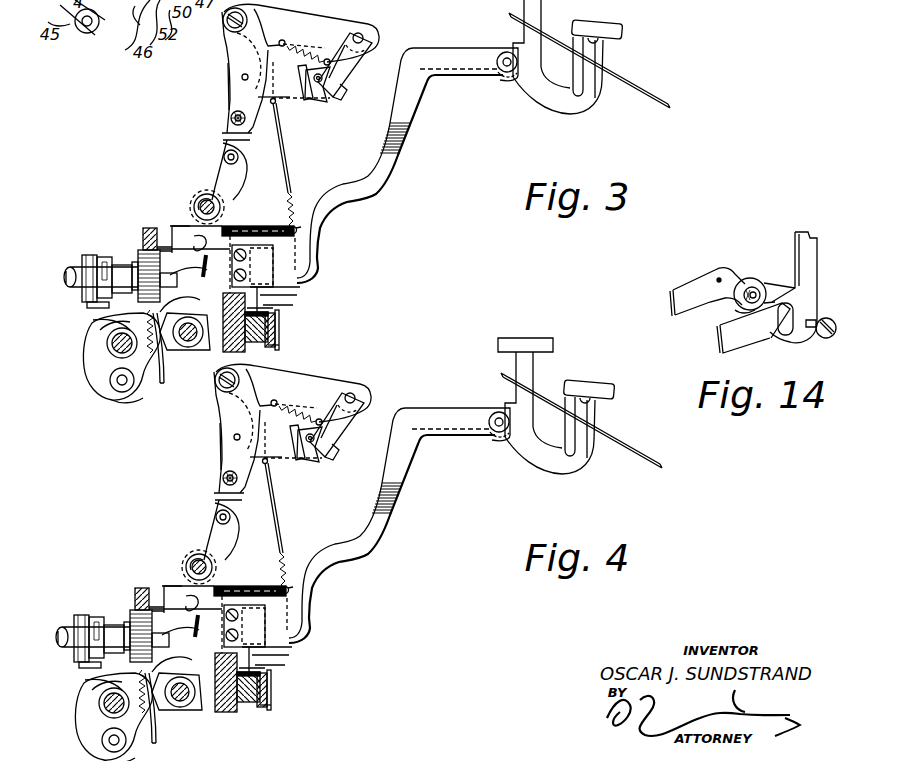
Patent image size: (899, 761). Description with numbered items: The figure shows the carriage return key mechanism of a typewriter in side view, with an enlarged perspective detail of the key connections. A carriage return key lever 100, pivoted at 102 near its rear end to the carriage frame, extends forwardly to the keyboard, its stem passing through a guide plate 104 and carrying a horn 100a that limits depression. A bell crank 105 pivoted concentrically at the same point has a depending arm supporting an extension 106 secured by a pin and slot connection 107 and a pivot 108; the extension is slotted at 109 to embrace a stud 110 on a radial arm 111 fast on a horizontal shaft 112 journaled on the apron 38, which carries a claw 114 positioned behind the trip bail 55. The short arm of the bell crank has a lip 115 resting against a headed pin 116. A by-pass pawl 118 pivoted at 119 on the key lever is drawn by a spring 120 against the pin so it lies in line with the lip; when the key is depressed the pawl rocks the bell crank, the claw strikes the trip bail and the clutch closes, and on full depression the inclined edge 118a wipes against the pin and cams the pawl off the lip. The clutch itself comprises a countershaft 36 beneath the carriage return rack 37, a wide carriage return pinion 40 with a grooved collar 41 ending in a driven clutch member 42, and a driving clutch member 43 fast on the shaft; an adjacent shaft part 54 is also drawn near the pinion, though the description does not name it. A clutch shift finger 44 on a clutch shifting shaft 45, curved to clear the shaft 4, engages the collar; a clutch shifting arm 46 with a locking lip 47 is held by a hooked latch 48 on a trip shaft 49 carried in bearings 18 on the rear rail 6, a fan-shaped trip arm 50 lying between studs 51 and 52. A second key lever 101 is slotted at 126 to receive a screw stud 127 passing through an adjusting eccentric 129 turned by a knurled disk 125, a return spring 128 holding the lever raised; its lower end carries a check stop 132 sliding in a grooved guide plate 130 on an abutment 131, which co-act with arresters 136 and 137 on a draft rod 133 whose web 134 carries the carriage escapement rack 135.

In FIG. 3, the shaft 4 is at (112, 347).
In FIG. 4, the shaft 4 is at (92, 711).
In FIG. 3, the rear rail 6 is at (224, 312).
In FIG. 4, the rear rail 6 is at (219, 682).
In FIG. 3, the bearings 18 is at (206, 340).
In FIG. 4, the bearings 18 is at (190, 692).
In FIG. 3, the countershaft 36 is at (74, 272).
In FIG. 4, the countershaft 36 is at (85, 624).
In FIG. 3, the carriage return rack 37 is at (149, 228).
In FIG. 4, the carriage return rack 37 is at (140, 586).
In FIG. 3, the apron 38 is at (194, 236).
In FIG. 4, the apron 38 is at (167, 584).
In FIG. 3, the carriage return pinion 40 is at (140, 252).
In FIG. 4, the carriage return pinion 40 is at (133, 624).
In FIG. 3, the peripherally grooved collar 41 is at (120, 265).
In FIG. 4, the peripherally grooved collar 41 is at (110, 612).
In FIG. 3, the driven clutch member 42 is at (105, 258).
In FIG. 4, the driven clutch member 42 is at (94, 624).
In FIG. 3, the driving clutch member 43 is at (89, 256).
In FIG. 4, the driving clutch member 43 is at (78, 618).
In FIG. 3, the clutch shift finger 44 is at (88, 340).
In FIG. 4, the clutch shift finger 44 is at (96, 716).
In FIG. 3, the clutch shifting shaft 45 is at (117, 378).
In FIG. 4, the clutch shifting shaft 45 is at (114, 740).
In FIG. 3, the clutch shifting arm 46 is at (145, 398).
In FIG. 4, the clutch shifting arm 46 is at (142, 742).
In FIG. 3, the lateral locking lip 47 is at (95, 322).
In FIG. 4, the lateral locking lip 47 is at (87, 682).
In FIG. 3, the hooked latch 48 is at (87, 304).
In FIG. 4, the hooked latch 48 is at (73, 665).
In FIG. 3, the trip shaft 49 is at (183, 346).
In FIG. 4, the trip shaft 49 is at (190, 708).
In FIG. 3, the fan-shaped trip arm 50 is at (162, 368).
In FIG. 4, the fan-shaped trip arm 50 is at (169, 700).
In FIG. 3, the stud 51 is at (180, 304).
In FIG. 4, the stud 51 is at (175, 662).
In FIG. 3, the stud 52 is at (162, 384).
In FIG. 4, the stud 52 is at (159, 708).
In FIG. 3, the shaft end 54 is at (180, 283).
In FIG. 4, the shaft end 54 is at (175, 640).
In FIG. 3, the trip bail 55 is at (208, 265).
In FIG. 4, the trip bail 55 is at (209, 630).
In FIG. 3, the key lever 100 is at (318, 27).
In FIG. 4, the key lever 100 is at (293, 392).
In FIG. 14, the key lever 100 is at (697, 285).
In FIG. 3, the horn 100a is at (590, 28).
In FIG. 4, the horn 100a is at (576, 407).
In FIG. 3, the second key lever 101 is at (522, 12).
In FIG. 4, the second key lever 101 is at (442, 490).
In FIG. 14, the second key lever 101 is at (796, 258).
In FIG. 3, the pivot 102 is at (230, 30).
In FIG. 4, the pivot 102 is at (218, 409).
In FIG. 3, the guide plate 104 is at (641, 91).
In FIG. 4, the guide plate 104 is at (583, 420).
In FIG. 3, the bell crank 105 is at (247, 53).
In FIG. 4, the bell crank 105 is at (228, 464).
In FIG. 3, the extension 106 is at (222, 136).
In FIG. 4, the extension 106 is at (211, 490).
In FIG. 3, the pin and slot connection 107 is at (231, 118).
In FIG. 4, the pin and slot connection 107 is at (208, 474).
In FIG. 3, the pivot 108 is at (242, 78).
In FIG. 4, the pivot 108 is at (212, 441).
In FIG. 3, the slot 109 is at (228, 165).
In FIG. 4, the slot 109 is at (208, 531).
In FIG. 3, the stud 110 is at (224, 157).
In FIG. 4, the stud 110 is at (203, 529).
In FIG. 3, the radial arm 111 is at (212, 195).
In FIG. 4, the radial arm 111 is at (183, 557).
In FIG. 3, the horizontal shaft 112 is at (221, 207).
In FIG. 4, the horizontal shaft 112 is at (221, 567).
In FIG. 3, the claw 114 is at (200, 250).
In FIG. 4, the claw 114 is at (189, 599).
In FIG. 3, the lip 115 is at (305, 100).
In FIG. 4, the lip 115 is at (301, 454).
In FIG. 3, the headed pin 116 is at (328, 92).
In FIG. 4, the headed pin 116 is at (328, 454).
In FIG. 3, the by-pass pawl 118 is at (372, 45).
In FIG. 4, the by-pass pawl 118 is at (339, 425).
In FIG. 3, the abruptly inclined edge 118a is at (343, 86).
In FIG. 4, the abruptly inclined edge 118a is at (354, 454).
In FIG. 3, the pivot 119 is at (363, 36).
In FIG. 4, the pivot 119 is at (367, 396).
In FIG. 3, the spring 120 is at (309, 54).
In FIG. 4, the spring 120 is at (324, 393).
In FIG. 14, the knurled disk 125 is at (735, 310).
In FIG. 3, the slot 126 is at (508, 80).
In FIG. 4, the slot 126 is at (482, 412).
In FIG. 14, the slot 126 is at (768, 341).
In FIG. 14, the screw stud 127 is at (830, 338).
In FIG. 3, the return spring 128 is at (284, 198).
In FIG. 4, the return spring 128 is at (270, 528).
In FIG. 3, the adjusting eccentric 129 is at (504, 56).
In FIG. 4, the adjusting eccentric 129 is at (483, 435).
In FIG. 14, the adjusting eccentric 129 is at (750, 280).
In FIG. 3, the guide plate 130 is at (297, 280).
In FIG. 4, the guide plate 130 is at (277, 627).
In FIG. 3, the abutment 131 is at (297, 295).
In FIG. 4, the abutment 131 is at (239, 626).
In FIG. 3, the check stop 132 is at (294, 305).
In FIG. 4, the check stop 132 is at (285, 665).
In FIG. 3, the draft rod 133 is at (279, 337).
In FIG. 4, the draft rod 133 is at (298, 693).
In FIG. 3, the web 134 is at (255, 343).
In FIG. 4, the web 134 is at (250, 708).
In FIG. 3, the carriage escapement rack 135 is at (279, 346).
In FIG. 4, the carriage escapement rack 135 is at (290, 694).
In FIG. 3, the arrester 136 is at (276, 320).
In FIG. 4, the arrester 137 is at (282, 690).